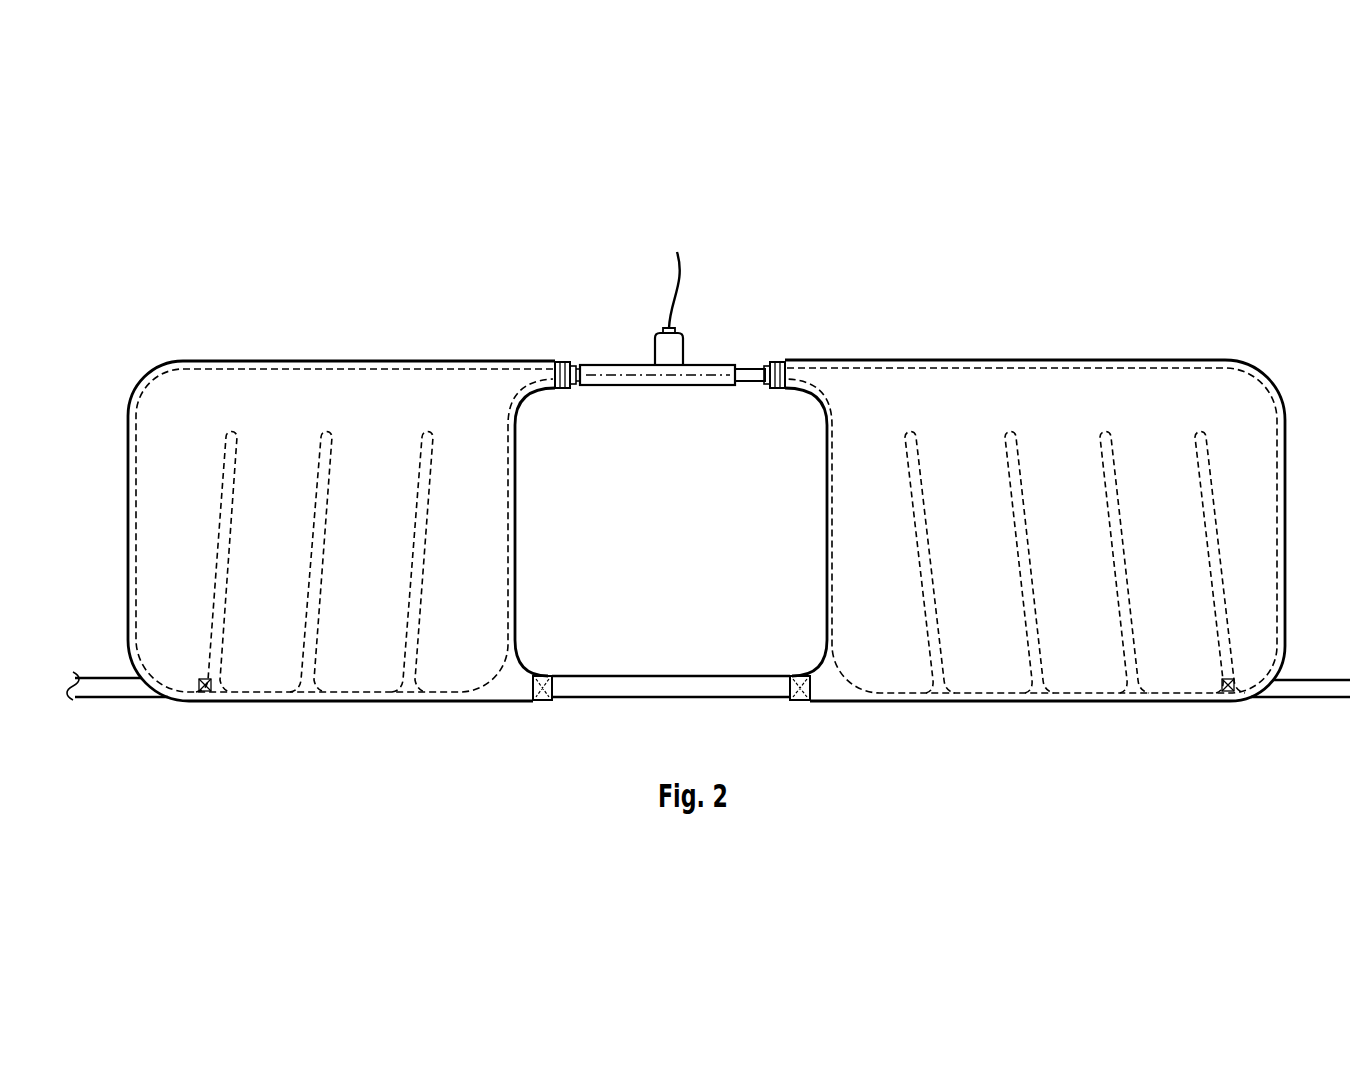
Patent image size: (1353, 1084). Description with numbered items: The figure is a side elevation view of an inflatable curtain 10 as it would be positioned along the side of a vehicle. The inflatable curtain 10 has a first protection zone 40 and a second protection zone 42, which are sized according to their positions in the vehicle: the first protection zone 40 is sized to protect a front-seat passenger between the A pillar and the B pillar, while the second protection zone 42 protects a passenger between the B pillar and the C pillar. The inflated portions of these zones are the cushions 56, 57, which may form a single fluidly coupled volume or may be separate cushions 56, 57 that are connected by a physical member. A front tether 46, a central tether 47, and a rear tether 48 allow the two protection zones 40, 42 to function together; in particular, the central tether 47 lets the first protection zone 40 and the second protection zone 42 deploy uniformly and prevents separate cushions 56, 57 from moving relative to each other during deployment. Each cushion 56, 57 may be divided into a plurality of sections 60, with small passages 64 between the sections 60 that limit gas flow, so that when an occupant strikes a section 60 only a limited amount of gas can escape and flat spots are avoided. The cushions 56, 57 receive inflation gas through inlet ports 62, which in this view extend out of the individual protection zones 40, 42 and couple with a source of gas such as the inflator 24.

The inflatable curtain 10 is at (1138, 292).
The inflator 24 is at (630, 372).
The first protection zone 40 is at (203, 360).
The second protection zone 42 is at (1181, 360).
The front tether 46 is at (115, 688).
The central tether 47 is at (595, 690).
The rear tether 48 is at (1307, 700).
The cushion 56 is at (265, 587).
The cushion 57 is at (1062, 637).
The section 60 is at (216, 530).
The inlet port 62 is at (552, 362).
The small passage 64 is at (430, 387).